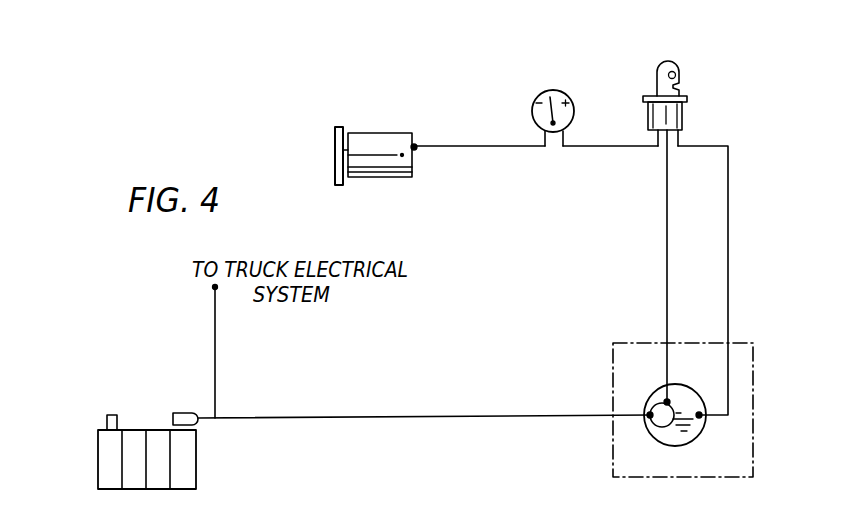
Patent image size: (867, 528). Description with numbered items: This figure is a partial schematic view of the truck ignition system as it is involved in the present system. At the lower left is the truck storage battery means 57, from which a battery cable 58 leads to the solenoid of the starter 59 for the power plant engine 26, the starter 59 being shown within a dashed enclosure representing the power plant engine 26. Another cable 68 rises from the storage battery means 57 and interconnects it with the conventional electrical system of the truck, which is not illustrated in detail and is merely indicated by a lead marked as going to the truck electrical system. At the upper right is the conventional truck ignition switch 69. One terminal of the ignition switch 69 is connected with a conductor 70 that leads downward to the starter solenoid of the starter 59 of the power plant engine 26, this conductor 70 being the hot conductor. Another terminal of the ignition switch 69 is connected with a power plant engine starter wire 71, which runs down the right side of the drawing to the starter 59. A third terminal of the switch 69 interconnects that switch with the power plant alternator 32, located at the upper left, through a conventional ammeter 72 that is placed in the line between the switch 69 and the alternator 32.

The power plant engine 26 is at (753, 343).
The power plant alternator 32 is at (385, 173).
The truck storage battery means 57 is at (108, 470).
The battery cable 58 is at (438, 418).
The starter 59 is at (660, 405).
The cable 68 is at (215, 351).
The truck ignition switch 69 is at (683, 113).
The conductor 70 is at (667, 237).
The power plant engine starter wire 71 is at (728, 220).
The ammeter 72 is at (533, 110).